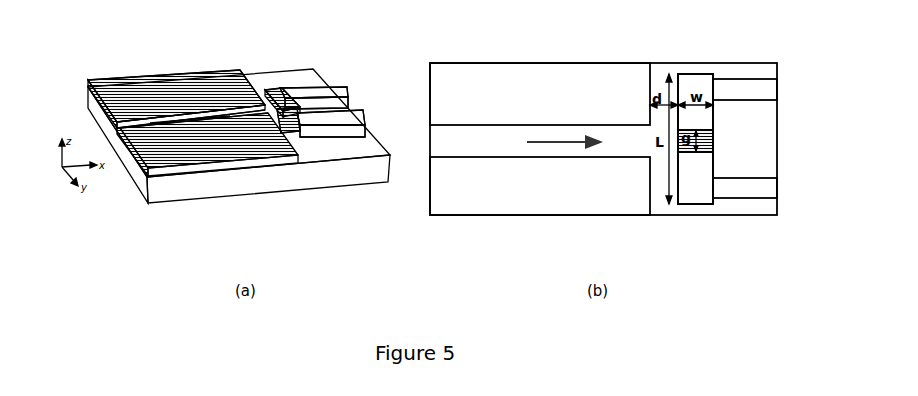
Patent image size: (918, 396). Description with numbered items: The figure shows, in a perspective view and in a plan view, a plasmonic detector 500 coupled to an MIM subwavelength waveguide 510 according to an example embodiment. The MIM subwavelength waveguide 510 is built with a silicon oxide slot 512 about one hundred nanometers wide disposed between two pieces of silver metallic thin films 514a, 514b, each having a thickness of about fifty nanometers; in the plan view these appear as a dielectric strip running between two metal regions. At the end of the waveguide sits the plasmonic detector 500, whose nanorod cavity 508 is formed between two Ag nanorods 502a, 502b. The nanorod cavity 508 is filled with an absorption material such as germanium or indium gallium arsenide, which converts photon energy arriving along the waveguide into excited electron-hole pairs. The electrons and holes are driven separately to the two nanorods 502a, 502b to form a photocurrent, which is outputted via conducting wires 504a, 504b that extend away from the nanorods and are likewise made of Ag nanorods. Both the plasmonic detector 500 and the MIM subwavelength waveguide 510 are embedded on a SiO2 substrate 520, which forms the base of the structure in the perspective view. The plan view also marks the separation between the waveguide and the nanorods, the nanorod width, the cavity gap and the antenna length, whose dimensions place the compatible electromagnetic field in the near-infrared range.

The plasmonic detector 500 is at (326, 55).
The Ag nanorod 502a is at (690, 82).
The Ag nanorod 502b is at (690, 187).
The conducting wire 504a is at (753, 83).
The conducting wire 504b is at (737, 188).
The nanorod cavity 508 is at (703, 144).
The MIM subwavelength waveguide 510 is at (140, 62).
The silicon oxide slot 512 is at (511, 146).
The Ag metallic thin film 514a is at (226, 85).
The Ag metallic thin film 514b is at (260, 143).
The SiO2 substrate 520 is at (212, 188).